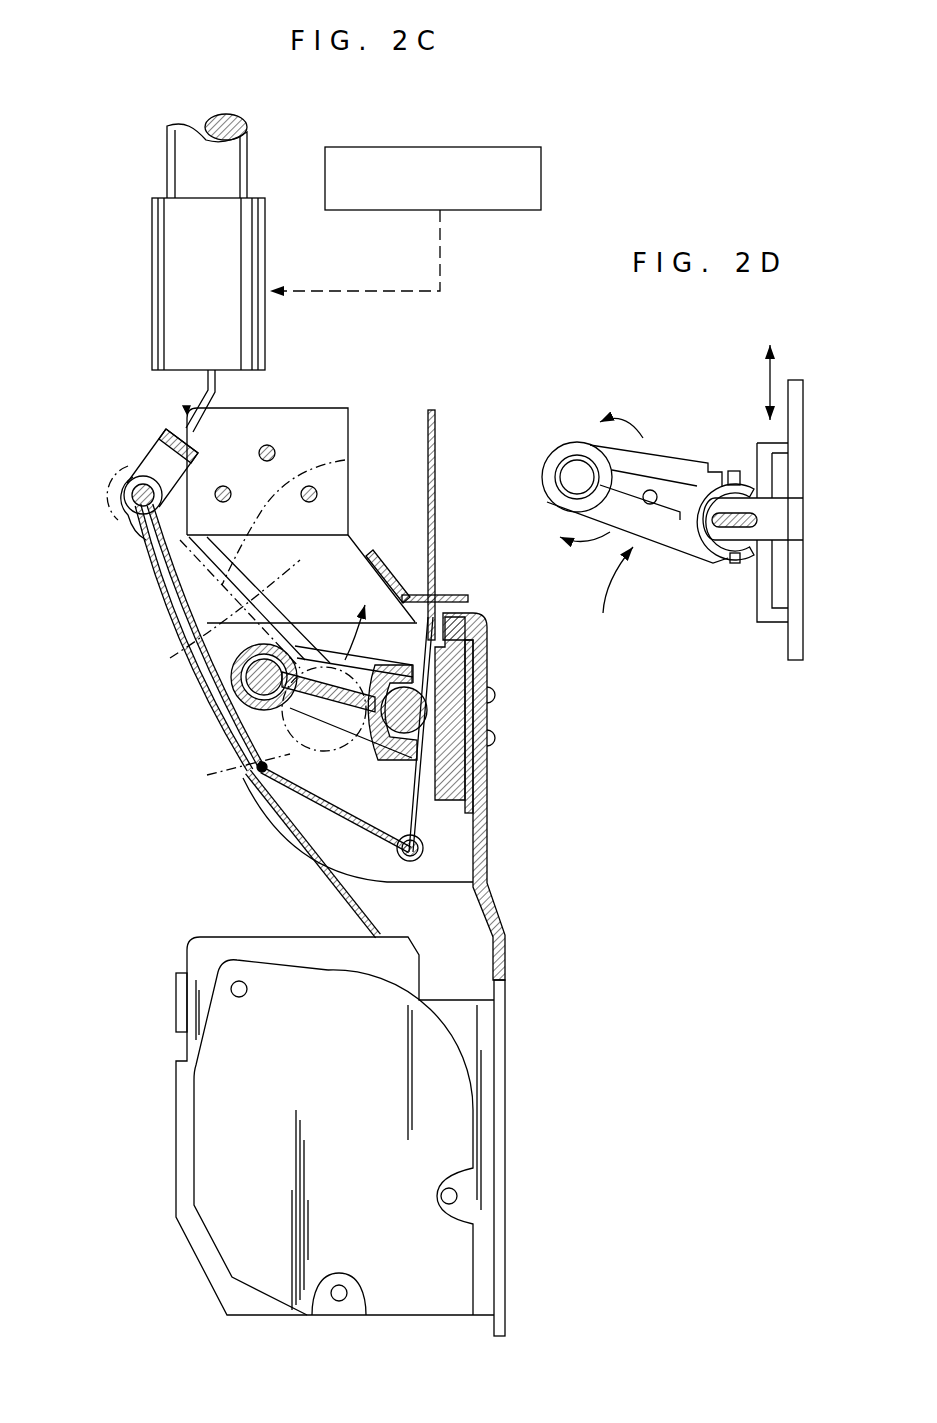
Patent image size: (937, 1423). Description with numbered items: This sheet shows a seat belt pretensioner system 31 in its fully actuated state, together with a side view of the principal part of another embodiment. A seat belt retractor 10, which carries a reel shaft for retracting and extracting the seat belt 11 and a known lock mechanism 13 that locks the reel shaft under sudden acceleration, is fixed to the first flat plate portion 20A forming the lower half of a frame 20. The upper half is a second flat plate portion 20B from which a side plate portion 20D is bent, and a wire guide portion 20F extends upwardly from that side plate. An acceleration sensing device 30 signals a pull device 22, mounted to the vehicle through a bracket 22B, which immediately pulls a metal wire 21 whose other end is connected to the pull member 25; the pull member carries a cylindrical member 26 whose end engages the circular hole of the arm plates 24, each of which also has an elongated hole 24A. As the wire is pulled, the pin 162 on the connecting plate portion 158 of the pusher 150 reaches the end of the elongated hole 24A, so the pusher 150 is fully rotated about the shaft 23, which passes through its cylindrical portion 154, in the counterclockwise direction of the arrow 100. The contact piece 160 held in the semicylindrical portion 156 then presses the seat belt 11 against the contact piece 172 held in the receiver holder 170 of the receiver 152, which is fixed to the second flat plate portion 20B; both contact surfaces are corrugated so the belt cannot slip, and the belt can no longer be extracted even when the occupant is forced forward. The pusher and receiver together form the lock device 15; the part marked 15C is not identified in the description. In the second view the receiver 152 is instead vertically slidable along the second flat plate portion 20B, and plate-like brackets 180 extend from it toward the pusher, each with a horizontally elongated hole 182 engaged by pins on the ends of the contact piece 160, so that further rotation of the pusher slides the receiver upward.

In FIG. 2C, the seat belt retractor 10 is at (180, 1095).
In FIG. 2C, the seat belt 11 is at (435, 468).
In FIG. 2C, the lock mechanism 13 is at (183, 1165).
In FIG. 2C, the lock device 15 is at (188, 683).
In FIG. 2C, the spring end pin 15C is at (255, 770).
In FIG. 2C, the frame 20 is at (510, 1128).
In FIG. 2D, the frame 20 is at (806, 588).
In FIG. 2C, the first flat plate portion 20A is at (508, 1072).
In FIG. 2C, the second flat plate portion 20B is at (487, 835).
In FIG. 2D, the second flat plate portion 20B is at (805, 440).
In FIG. 2C, the side plate portion 20D is at (398, 882).
In FIG. 2C, the wire guide portion 20F is at (320, 408).
In FIG. 2C, the metal wire 21 is at (198, 384).
In FIG. 2C, the pull device 22 is at (158, 322).
In FIG. 2C, the bracket 22B is at (168, 173).
In FIG. 2C, the shaft 23 is at (250, 688).
In FIG. 2D, the shaft 23 is at (565, 478).
In FIG. 2C, the arm plates 24 is at (345, 460).
In FIG. 2C, the elongated hole 24A is at (170, 658).
In FIG. 2C, the pull member 25 is at (156, 445).
In FIG. 2C, the cylindrical member 26 is at (134, 506).
In FIG. 2C, the acceleration sensing device 30 is at (478, 212).
In FIG. 2C, the pretensioner system 31 is at (154, 608).
In FIG. 2C, the arrow 100 is at (348, 628).
In FIG. 2C, the pusher 150 is at (340, 733).
In FIG. 2D, the pusher 150 is at (637, 541).
In FIG. 2C, the receiver 152 is at (578, 757).
In FIG. 2D, the receiver 152 is at (795, 712).
In FIG. 2C, the cylindrical portion 154 is at (243, 700).
In FIG. 2D, the cylindrical portion 154 is at (562, 445).
In FIG. 2C, the semicylindrical portion 156 is at (362, 676).
In FIG. 2D, the semicylindrical portion 156 is at (700, 478).
In FIG. 2D, the connecting plate portion 158 is at (643, 460).
In FIG. 2C, the contact piece 160 is at (413, 757).
In FIG. 2D, the contact piece 160 is at (738, 468).
In FIG. 2D, the pin 162 is at (628, 542).
In FIG. 2C, the receiver holder 170 is at (466, 766).
In FIG. 2D, the receiver holder 170 is at (780, 617).
In FIG. 2C, the contact piece 172 is at (473, 786).
In FIG. 2D, the contact piece 172 is at (760, 600).
In FIG. 2D, the bracket 180 is at (782, 522).
In FIG. 2D, the elongated hole 182 is at (730, 528).